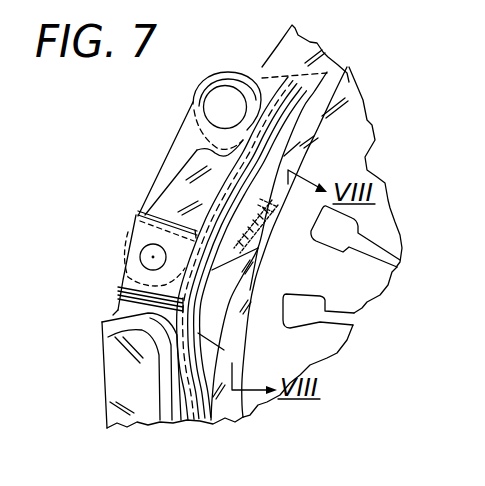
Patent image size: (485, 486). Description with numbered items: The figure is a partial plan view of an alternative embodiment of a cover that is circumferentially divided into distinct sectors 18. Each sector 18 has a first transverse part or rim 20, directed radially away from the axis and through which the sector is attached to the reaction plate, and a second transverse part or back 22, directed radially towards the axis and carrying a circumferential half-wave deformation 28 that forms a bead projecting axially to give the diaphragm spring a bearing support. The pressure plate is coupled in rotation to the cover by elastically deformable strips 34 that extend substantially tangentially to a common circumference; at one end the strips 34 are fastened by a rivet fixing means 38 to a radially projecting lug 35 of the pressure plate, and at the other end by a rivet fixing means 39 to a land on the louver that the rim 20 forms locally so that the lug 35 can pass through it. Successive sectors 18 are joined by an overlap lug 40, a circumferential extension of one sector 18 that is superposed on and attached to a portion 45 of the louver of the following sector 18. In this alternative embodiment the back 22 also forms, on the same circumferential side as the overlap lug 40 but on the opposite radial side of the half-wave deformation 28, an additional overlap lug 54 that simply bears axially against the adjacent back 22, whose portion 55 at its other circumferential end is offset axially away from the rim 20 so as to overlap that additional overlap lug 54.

The sector 18 is at (270, 43).
The first transverse part 20 is at (300, 69).
The second transverse part 22 is at (306, 244).
The circumferential half-wave deformation 28 is at (340, 80).
The elastically deformable strip 34 is at (178, 152).
The lug 35 is at (262, 78).
The fixing means 38 is at (236, 118).
The fixing means 39 is at (145, 256).
The overlap lug 40 is at (198, 298).
The portion 45 is at (143, 230).
The additional overlap lug 54 is at (242, 298).
The portion 55 is at (263, 229).